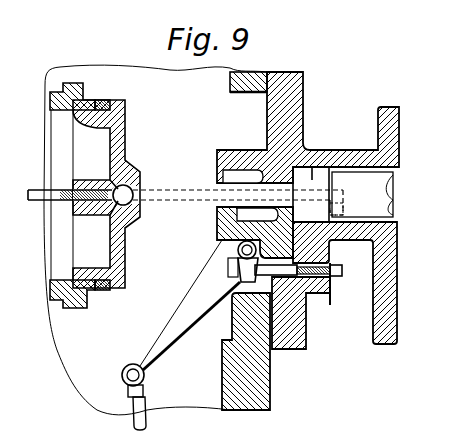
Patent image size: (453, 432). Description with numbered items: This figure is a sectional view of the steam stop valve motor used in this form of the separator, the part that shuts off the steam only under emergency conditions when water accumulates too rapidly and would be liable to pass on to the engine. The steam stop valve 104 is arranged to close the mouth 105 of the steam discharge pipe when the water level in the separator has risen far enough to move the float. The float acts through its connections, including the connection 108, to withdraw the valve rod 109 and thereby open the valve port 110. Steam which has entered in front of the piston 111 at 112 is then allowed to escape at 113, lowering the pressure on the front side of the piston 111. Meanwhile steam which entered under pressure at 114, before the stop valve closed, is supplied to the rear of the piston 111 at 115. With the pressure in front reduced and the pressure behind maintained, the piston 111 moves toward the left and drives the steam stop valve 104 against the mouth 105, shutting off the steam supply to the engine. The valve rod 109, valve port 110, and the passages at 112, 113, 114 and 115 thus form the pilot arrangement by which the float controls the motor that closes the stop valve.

The steam stop valve 104 is at (103, 100).
The mouth 105 is at (52, 100).
The connection 108 is at (155, 352).
The valve rod 109 is at (230, 271).
The valve port 110 is at (288, 254).
The piston 111 is at (313, 142).
The steam entry in front of piston 112 is at (267, 103).
The steam escape 113 is at (323, 282).
The steam entry 114 is at (127, 154).
The steam supply to rear of piston 115 is at (333, 217).